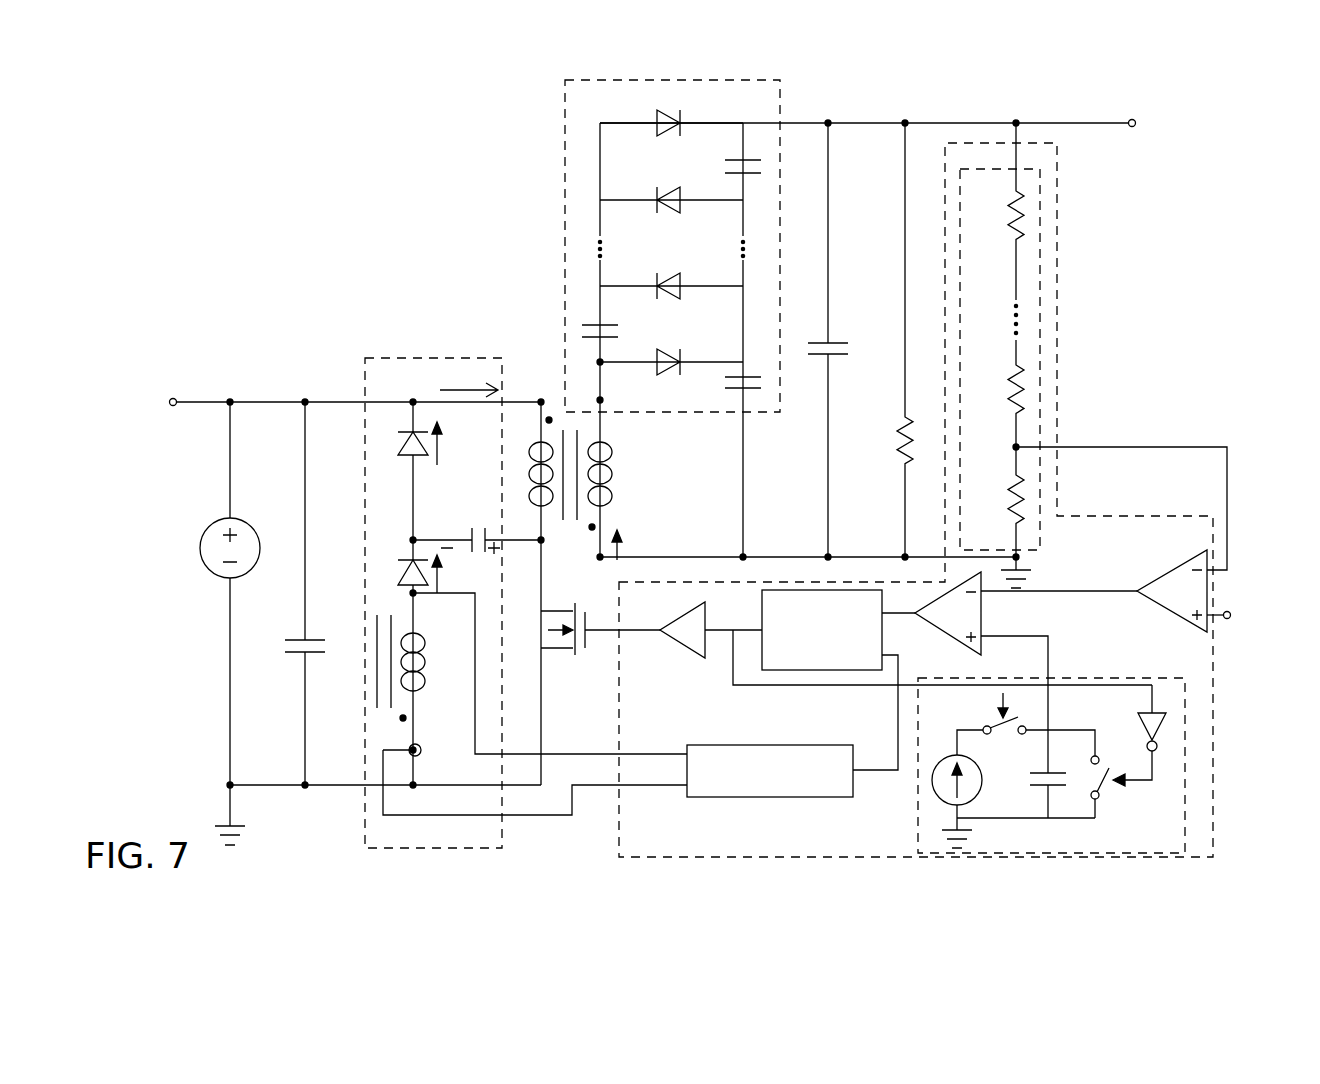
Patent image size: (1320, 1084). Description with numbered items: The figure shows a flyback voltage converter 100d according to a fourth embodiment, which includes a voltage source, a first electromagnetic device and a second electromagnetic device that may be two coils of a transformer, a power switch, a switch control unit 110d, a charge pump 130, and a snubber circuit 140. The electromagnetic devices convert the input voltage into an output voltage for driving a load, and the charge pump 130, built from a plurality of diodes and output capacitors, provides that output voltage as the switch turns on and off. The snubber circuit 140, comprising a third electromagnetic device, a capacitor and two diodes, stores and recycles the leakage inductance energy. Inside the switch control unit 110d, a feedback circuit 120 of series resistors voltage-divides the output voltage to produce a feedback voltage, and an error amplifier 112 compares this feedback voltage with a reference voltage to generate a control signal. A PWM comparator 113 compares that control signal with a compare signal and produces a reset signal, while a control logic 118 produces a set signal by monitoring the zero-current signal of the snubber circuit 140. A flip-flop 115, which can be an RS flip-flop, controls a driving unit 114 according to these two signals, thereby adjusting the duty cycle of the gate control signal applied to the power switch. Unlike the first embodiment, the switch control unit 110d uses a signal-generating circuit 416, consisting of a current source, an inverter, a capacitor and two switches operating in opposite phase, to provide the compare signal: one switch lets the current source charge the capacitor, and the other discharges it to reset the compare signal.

The flyback voltage converter 100d is at (312, 178).
The switch control unit 110d is at (1213, 700).
The error amplifier 112 is at (1164, 571).
The PWM comparator 113 is at (932, 632).
The driving unit 114 is at (688, 650).
The flip-flop 115 is at (860, 670).
The control logic 118 is at (712, 745).
The feedback circuit 120 is at (1042, 362).
The charge pump 130 is at (563, 192).
The snubber circuit 140 is at (432, 358).
The signal-generating circuit 416 is at (1185, 765).